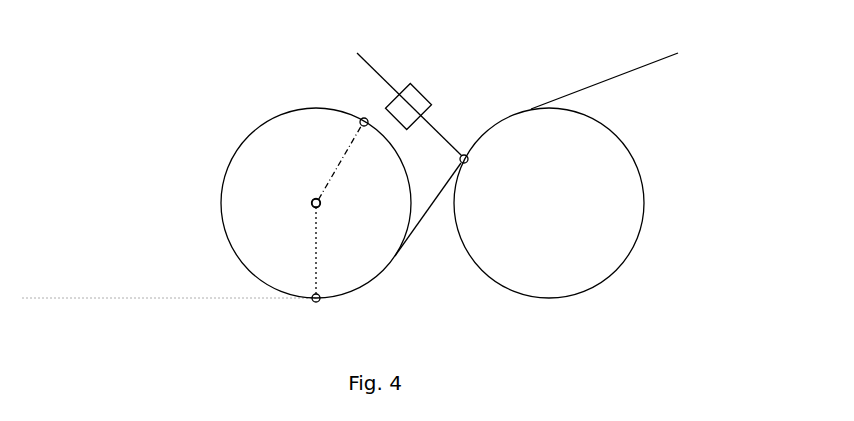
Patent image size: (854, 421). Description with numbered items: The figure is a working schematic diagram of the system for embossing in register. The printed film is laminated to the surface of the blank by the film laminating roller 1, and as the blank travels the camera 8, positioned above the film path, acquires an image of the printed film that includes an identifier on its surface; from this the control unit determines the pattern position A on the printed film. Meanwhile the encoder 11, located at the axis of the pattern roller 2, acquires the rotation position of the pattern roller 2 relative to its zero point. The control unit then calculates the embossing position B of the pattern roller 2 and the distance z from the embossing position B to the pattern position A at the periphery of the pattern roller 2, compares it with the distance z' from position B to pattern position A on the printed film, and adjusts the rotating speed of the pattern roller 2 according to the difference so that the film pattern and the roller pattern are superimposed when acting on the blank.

The film laminating roller 1 is at (580, 222).
The pattern roller 2 is at (293, 132).
The camera 8 is at (422, 99).
The encoder 11 is at (313, 205).